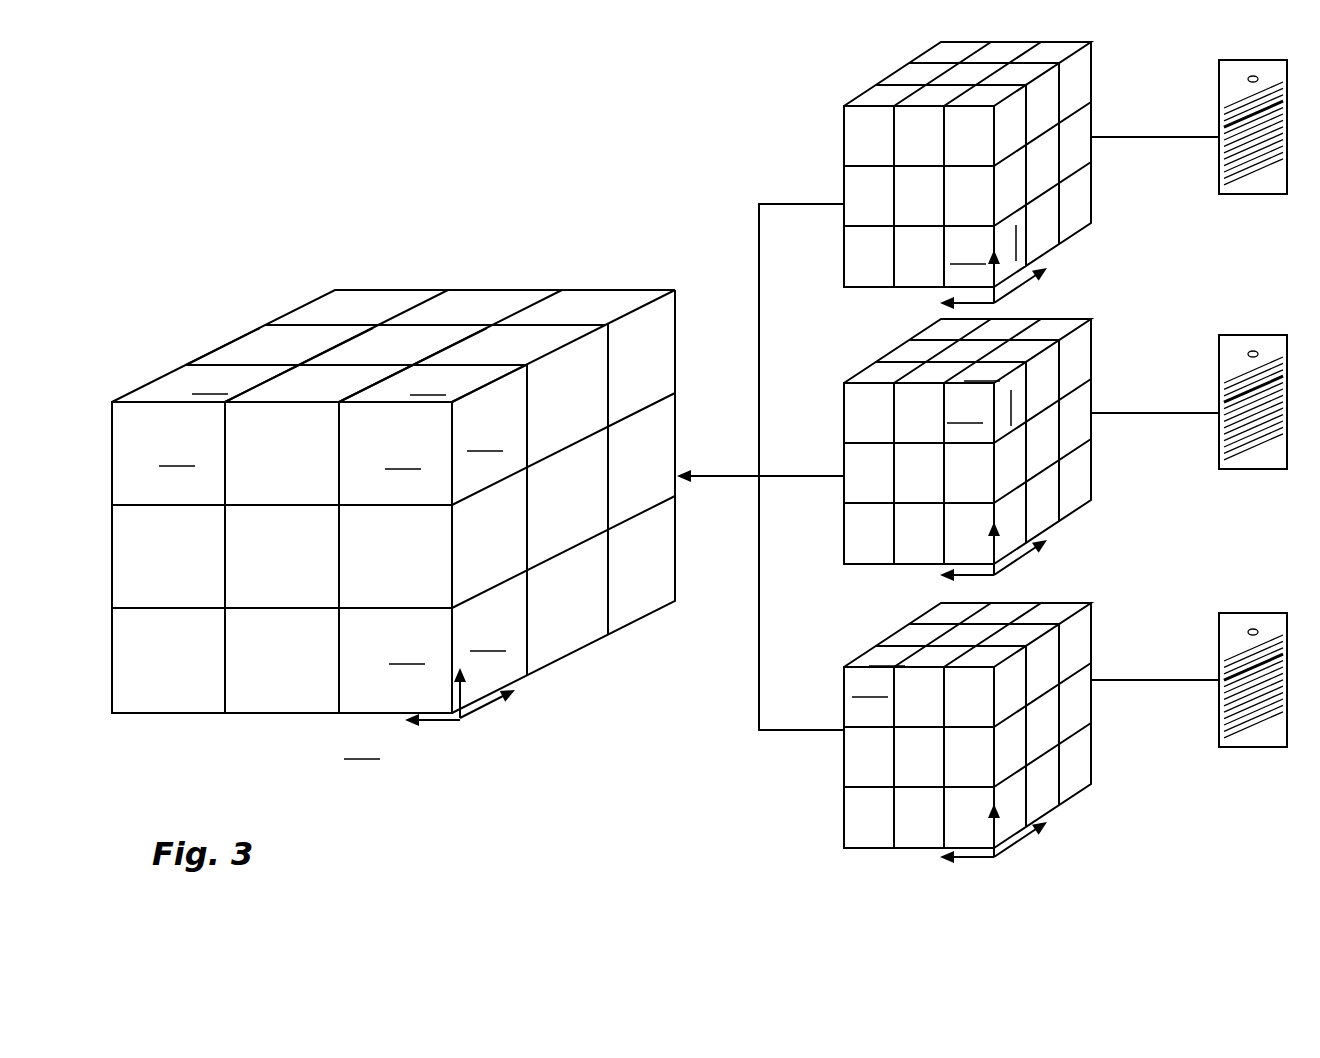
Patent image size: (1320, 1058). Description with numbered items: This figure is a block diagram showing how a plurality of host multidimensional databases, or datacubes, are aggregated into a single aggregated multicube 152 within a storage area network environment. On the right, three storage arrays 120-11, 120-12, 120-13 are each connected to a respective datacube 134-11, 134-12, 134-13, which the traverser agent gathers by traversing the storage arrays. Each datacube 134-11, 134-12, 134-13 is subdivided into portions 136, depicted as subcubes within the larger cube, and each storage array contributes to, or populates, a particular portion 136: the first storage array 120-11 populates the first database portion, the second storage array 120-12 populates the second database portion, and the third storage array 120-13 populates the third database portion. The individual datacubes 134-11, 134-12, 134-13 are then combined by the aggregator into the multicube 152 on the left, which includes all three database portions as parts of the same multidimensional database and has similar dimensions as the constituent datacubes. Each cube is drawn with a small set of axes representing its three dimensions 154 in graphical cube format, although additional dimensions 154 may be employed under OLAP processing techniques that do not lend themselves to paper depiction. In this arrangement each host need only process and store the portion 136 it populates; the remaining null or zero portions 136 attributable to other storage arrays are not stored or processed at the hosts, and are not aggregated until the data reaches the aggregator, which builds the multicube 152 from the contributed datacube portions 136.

The aggregated multicube 152 is at (336, 290).
The datacube 134-11 is at (942, 40).
The datacube 134-12 is at (843, 383).
The datacube 134-13 is at (845, 667).
The storage array 120-11 is at (1219, 60).
The storage array 120-12 is at (1219, 335).
The storage array 120-13 is at (1219, 613).
The portion 136 is at (886, 764).
The dimensions 154 is at (462, 719).